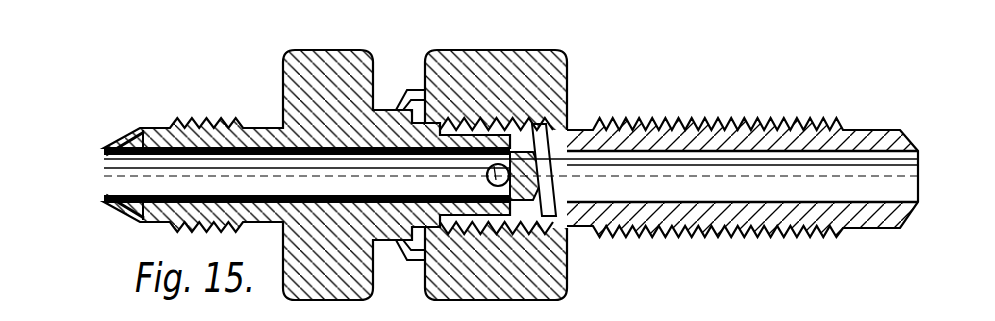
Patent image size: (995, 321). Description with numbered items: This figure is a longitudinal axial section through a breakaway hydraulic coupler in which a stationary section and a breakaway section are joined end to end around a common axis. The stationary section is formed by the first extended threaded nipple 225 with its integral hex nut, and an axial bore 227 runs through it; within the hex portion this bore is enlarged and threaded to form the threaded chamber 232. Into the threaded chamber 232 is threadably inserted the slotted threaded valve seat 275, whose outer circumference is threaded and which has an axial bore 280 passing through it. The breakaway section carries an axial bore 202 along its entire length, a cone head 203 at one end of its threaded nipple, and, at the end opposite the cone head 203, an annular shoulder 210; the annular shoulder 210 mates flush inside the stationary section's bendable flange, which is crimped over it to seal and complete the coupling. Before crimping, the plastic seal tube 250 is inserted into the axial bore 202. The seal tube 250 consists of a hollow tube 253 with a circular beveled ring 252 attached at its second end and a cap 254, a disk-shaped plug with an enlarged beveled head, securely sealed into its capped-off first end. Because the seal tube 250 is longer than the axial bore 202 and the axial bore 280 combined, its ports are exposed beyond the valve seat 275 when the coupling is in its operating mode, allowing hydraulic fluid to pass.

The axial bore 202 is at (104, 171).
The cone head 203 is at (137, 225).
The annular shoulder 210 is at (407, 108).
The first extended threaded nipple 225 is at (701, 110).
The axial bore 227 is at (835, 200).
The threaded chamber 232 is at (567, 97).
The plastic seal tube 250 is at (140, 126).
The circular beveled ring 252 is at (127, 220).
The hollow tube 253 is at (256, 151).
The cap 254 is at (563, 257).
The slotted threaded valve seat 275 is at (453, 108).
The axial bore 280 is at (466, 148).